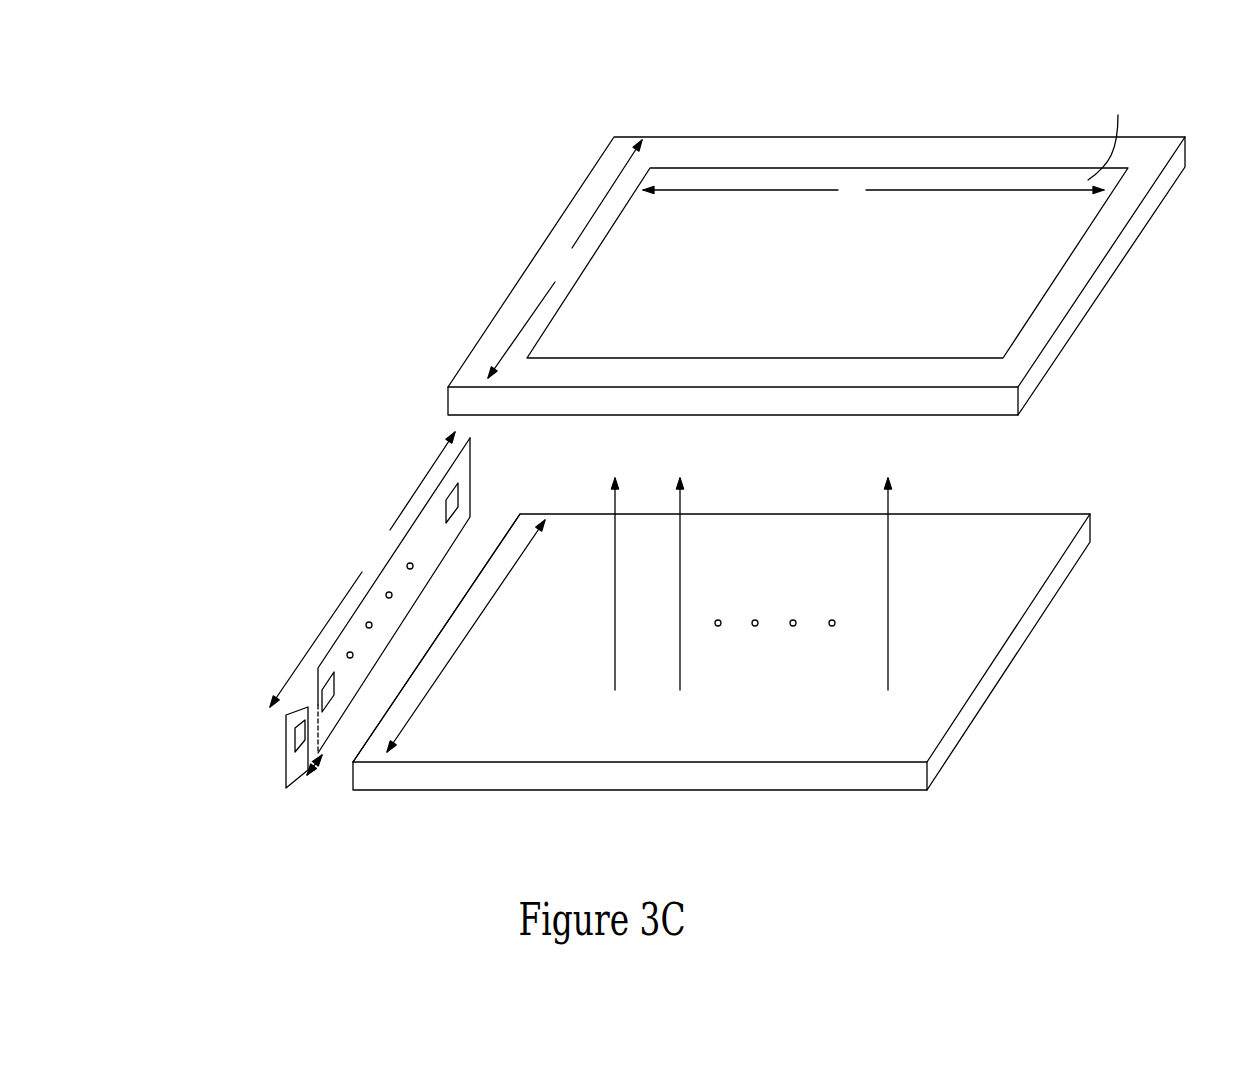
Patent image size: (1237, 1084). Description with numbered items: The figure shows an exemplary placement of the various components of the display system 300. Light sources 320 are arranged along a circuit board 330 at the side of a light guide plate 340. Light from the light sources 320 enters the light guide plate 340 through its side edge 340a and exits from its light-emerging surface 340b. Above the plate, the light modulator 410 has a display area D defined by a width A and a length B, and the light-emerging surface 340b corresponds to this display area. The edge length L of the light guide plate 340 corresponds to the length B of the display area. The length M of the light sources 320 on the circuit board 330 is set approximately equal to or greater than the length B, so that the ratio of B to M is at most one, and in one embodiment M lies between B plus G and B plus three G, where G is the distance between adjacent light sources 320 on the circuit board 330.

The display system 300 is at (347, 92).
The light sources 320 is at (296, 735).
The circuit board 330 is at (248, 786).
The light guide plate 340 is at (721, 689).
The side edge 340a is at (365, 742).
The light-emerging surface 340b is at (800, 743).
The light modulator 410 is at (1123, 247).